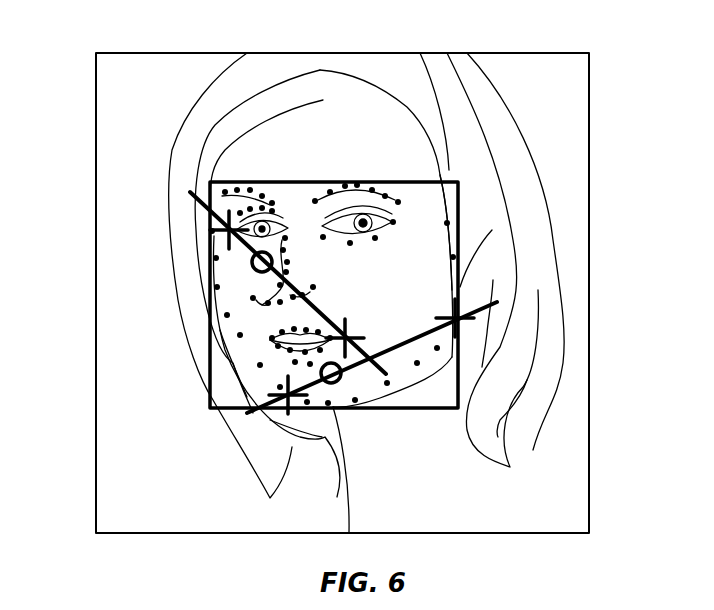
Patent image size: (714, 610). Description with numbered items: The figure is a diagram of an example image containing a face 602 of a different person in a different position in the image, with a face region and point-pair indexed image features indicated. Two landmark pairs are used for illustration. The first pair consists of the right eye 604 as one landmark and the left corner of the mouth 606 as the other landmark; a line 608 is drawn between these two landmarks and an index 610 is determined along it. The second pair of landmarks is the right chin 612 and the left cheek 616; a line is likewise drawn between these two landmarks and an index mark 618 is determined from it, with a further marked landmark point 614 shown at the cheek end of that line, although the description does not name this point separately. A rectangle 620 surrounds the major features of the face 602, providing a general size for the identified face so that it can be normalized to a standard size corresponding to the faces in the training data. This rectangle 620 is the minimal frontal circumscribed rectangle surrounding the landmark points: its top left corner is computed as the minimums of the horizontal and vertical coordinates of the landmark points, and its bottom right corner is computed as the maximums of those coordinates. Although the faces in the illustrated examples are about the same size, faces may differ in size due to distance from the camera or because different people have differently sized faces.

The face 602 is at (379, 154).
The right eye 604 is at (212, 236).
The left corner of the mouth 606 is at (352, 330).
The line 608 is at (338, 338).
The index 610 is at (252, 268).
The right chin 612 is at (290, 396).
The fourth facial landmark point (jaw) 614 is at (455, 318).
The left cheek 616 is at (412, 355).
The index mark 618 is at (334, 376).
The rectangle 620 is at (463, 198).